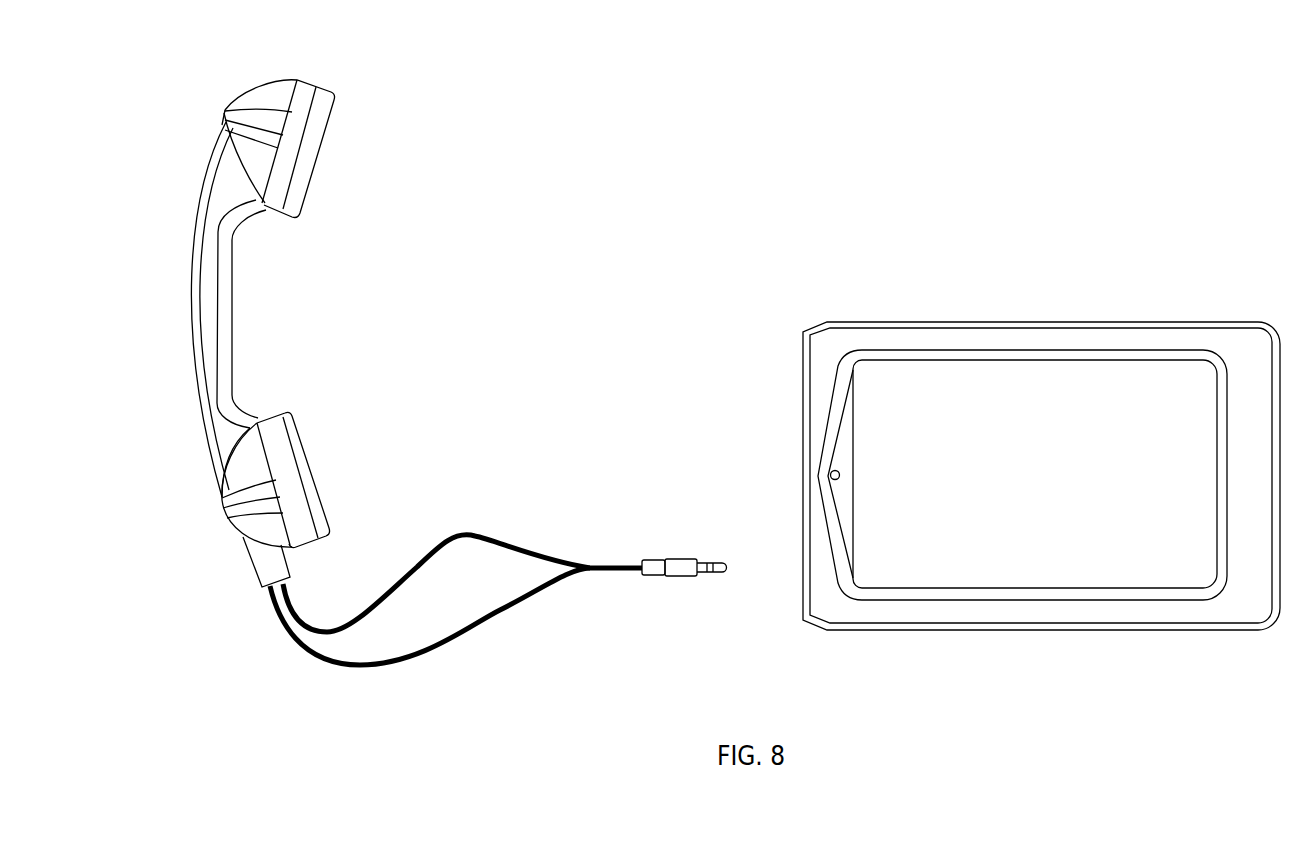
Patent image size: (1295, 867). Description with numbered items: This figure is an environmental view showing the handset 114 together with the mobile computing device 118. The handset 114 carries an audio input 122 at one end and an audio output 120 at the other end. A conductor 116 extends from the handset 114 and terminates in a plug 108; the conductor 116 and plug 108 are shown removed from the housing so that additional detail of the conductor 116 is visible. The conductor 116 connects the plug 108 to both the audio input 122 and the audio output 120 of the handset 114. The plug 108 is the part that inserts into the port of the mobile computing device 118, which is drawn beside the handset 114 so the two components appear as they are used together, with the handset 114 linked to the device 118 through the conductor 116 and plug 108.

The plug 108 is at (717, 572).
The handset 114 is at (232, 318).
The conductor 116 is at (605, 563).
The mobile computing device 118 is at (945, 325).
The audio output 120 is at (320, 146).
The audio input 122 is at (308, 470).